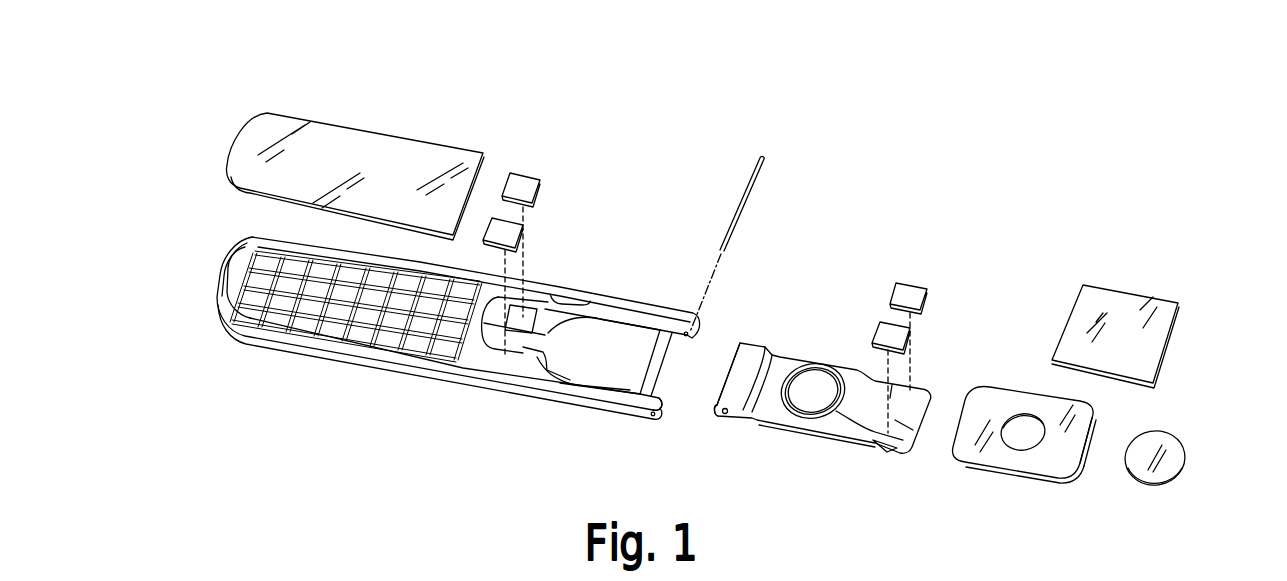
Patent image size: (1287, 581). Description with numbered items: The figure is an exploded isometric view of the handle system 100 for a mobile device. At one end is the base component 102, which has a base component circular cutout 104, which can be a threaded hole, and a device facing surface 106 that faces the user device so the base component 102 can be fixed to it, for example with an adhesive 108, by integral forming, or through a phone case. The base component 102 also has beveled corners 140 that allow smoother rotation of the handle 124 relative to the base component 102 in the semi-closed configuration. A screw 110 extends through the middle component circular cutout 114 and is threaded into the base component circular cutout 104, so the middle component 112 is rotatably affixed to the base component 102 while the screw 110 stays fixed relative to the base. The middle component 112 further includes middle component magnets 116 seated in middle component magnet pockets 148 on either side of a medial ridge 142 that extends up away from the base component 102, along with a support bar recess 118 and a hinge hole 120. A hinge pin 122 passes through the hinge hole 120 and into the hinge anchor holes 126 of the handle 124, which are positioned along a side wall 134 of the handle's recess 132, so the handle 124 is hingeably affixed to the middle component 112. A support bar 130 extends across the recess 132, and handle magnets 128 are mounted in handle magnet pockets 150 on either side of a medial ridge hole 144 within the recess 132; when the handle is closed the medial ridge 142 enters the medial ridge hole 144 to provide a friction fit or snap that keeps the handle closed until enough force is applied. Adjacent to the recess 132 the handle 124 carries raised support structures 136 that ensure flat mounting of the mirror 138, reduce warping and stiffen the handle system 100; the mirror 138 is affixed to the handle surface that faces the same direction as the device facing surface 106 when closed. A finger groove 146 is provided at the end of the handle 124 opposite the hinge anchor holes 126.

The handle system 100 is at (213, 85).
The base component 102 is at (984, 472).
The base component circular cutout 104 is at (1027, 433).
The device facing surface 106 is at (1065, 482).
The adhesive 108 is at (1127, 287).
The screw 110 is at (1180, 482).
The middle component 112 is at (785, 437).
The middle component circular cutout 114 is at (813, 390).
The middle component magnets 116 is at (913, 273).
The support bar recess 118 is at (774, 370).
The hinge hole 120 is at (722, 423).
The hinge pin 122 is at (752, 197).
The handle 124 is at (334, 356).
The hinge anchor holes 126 is at (653, 420).
The handle magnets 128 is at (528, 163).
The support bar 130 is at (634, 368).
The recess 132 is at (613, 347).
The side wall 134 is at (581, 303).
The raised support structures 136 is at (271, 311).
The mirror 138 is at (425, 128).
The beveled corners 140 is at (1090, 407).
The medial ridge 142 is at (912, 400).
The medial ridge hole 144 is at (545, 348).
The finger groove 146 is at (219, 267).
The middle component magnet pockets 148 is at (878, 442).
The handle magnet pockets 150 is at (494, 360).